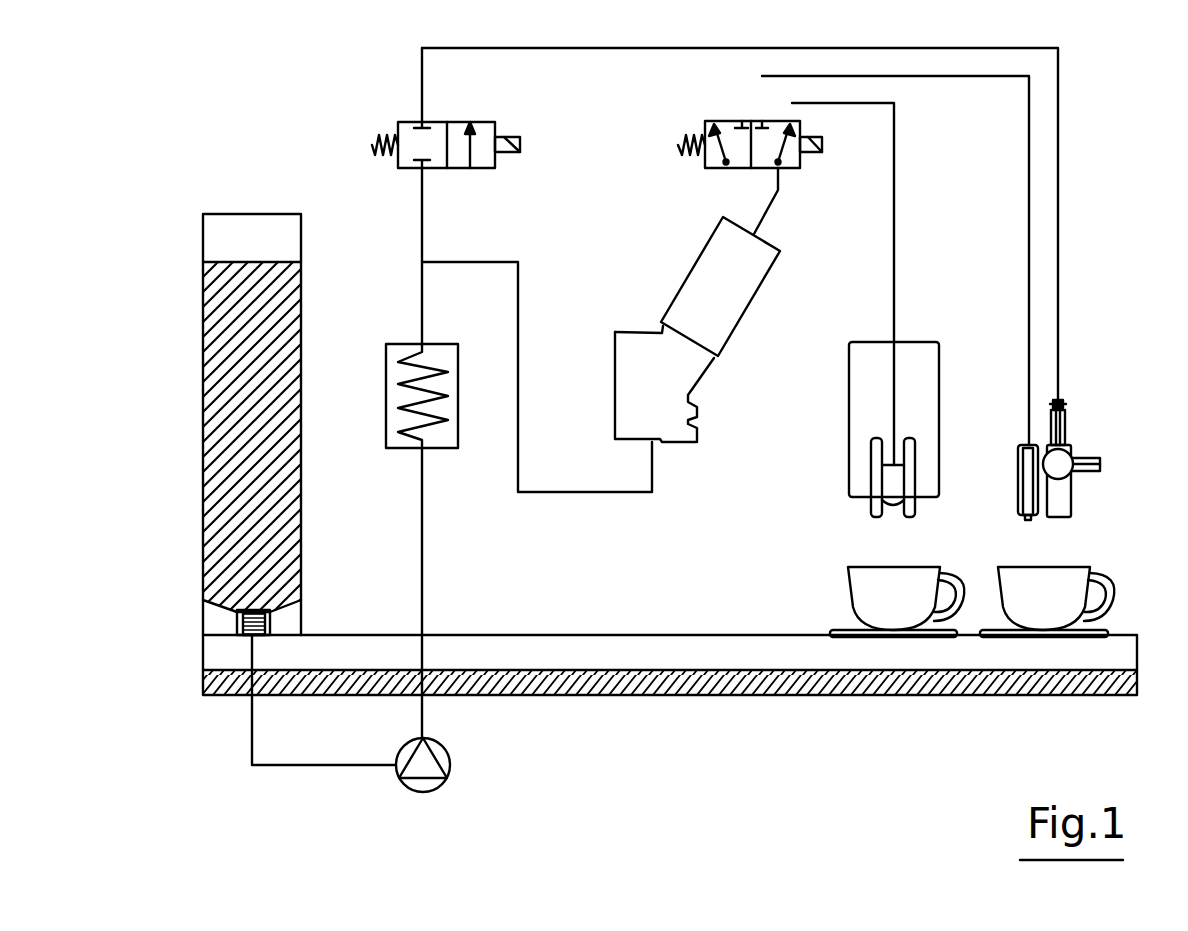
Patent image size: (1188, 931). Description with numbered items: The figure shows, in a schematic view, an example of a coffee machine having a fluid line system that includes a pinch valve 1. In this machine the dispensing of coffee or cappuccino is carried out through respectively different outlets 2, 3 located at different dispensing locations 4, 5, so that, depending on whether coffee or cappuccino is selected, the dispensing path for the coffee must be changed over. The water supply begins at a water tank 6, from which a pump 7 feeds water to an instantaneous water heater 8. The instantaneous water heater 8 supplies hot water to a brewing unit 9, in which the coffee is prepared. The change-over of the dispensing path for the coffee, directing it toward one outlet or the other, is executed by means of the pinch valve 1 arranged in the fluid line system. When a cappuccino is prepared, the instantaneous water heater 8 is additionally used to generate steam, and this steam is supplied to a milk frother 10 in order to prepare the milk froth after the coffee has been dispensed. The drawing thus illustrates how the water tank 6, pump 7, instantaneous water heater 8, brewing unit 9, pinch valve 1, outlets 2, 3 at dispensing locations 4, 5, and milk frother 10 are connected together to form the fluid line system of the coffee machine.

The pinch valve 1 is at (795, 163).
The outlet 2 is at (871, 510).
The outlet 3 is at (1022, 498).
The dispensing location 4 is at (835, 622).
The dispensing location 5 is at (1100, 630).
The water tank 6 is at (235, 478).
The pump 7 is at (440, 752).
The instantaneous water heater 8 is at (435, 447).
The brewing unit 9 is at (708, 298).
The milk frother 10 is at (1062, 505).